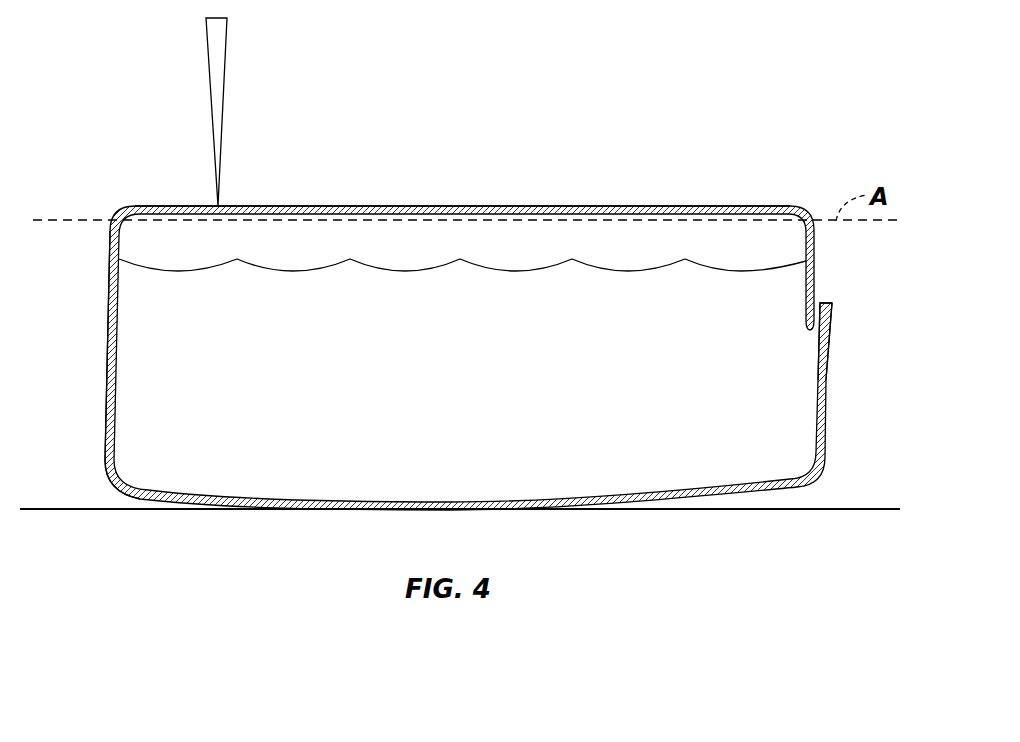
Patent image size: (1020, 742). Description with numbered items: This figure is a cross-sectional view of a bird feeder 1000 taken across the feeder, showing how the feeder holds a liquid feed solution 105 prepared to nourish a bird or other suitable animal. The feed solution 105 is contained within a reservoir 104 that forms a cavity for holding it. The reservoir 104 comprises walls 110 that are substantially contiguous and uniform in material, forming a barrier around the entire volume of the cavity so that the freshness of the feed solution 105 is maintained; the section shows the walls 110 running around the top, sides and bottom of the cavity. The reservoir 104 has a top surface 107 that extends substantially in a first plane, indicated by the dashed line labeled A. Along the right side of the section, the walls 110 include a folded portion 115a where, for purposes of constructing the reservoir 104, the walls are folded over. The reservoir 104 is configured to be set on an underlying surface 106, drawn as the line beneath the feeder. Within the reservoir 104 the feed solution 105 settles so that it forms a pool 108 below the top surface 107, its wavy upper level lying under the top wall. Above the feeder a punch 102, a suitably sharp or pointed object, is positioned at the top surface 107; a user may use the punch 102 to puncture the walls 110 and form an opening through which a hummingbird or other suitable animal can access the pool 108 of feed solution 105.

The bird feeder 1000 is at (746, 158).
The punch 102 is at (209, 68).
The reservoir 104 is at (99, 327).
The feed solution 105 is at (236, 259).
The underlying surface 106 is at (807, 512).
The top surface 107 is at (385, 207).
The pool 108 is at (490, 392).
The walls 110 is at (105, 437).
The folded portion 115a is at (832, 323).